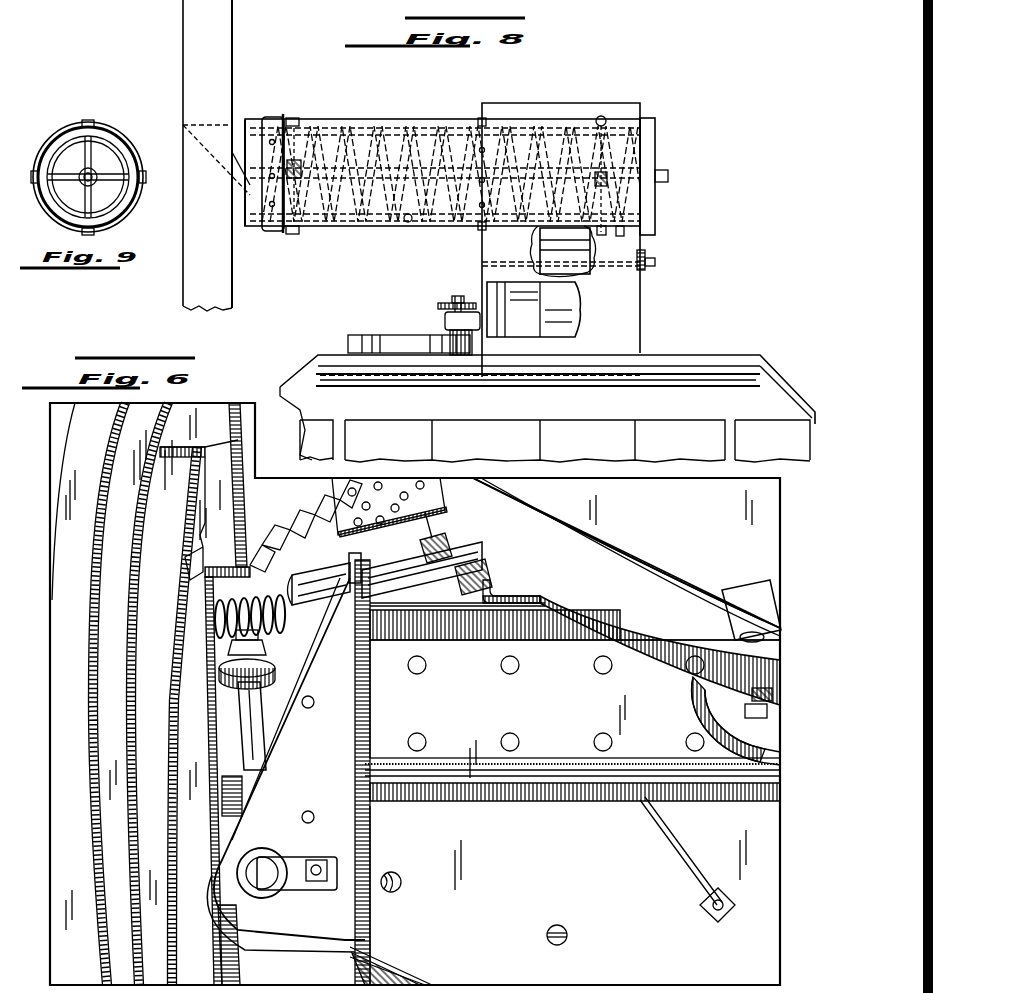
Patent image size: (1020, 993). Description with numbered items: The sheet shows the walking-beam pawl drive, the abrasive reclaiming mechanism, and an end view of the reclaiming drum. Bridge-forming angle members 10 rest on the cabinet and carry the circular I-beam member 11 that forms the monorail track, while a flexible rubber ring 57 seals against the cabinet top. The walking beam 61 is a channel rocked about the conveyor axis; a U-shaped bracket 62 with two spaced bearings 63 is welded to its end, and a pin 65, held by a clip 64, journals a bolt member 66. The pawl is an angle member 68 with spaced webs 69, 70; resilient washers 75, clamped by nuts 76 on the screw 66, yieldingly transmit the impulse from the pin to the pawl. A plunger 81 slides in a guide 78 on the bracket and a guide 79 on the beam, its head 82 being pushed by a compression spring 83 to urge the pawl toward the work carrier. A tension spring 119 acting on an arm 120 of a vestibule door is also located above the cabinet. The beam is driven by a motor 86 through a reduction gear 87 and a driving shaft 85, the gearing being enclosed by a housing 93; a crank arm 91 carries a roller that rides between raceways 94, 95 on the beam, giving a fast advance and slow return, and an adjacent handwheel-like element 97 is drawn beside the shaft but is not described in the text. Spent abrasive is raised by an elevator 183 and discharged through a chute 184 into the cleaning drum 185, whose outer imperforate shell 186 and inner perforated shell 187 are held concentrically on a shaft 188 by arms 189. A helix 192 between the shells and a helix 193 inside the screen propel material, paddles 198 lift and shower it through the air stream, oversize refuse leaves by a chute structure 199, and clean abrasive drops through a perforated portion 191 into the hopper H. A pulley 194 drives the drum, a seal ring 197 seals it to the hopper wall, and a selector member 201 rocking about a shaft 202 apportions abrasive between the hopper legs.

In FIG. 8, the bridge-forming angle members 10 is at (300, 366).
In FIG. 8, the circular I-beam member 11 is at (378, 378).
In FIG. 6, the circular I-beam member 11 is at (114, 697).
In FIG. 6, the flexible element 57 is at (177, 867).
In FIG. 6, the walking beam 61 is at (554, 800).
In FIG. 6, the bracket 62 is at (314, 784).
In FIG. 6, the bearings 63 is at (280, 892).
In FIG. 6, the clip 64 is at (306, 862).
In FIG. 6, the pin 65 is at (254, 857).
In FIG. 6, the bolt member 66 is at (262, 716).
In FIG. 6, the angle member 68 is at (204, 650).
In FIG. 6, the web 69 is at (262, 670).
In FIG. 6, the web 70 is at (212, 752).
In FIG. 6, the resilient washers 75 is at (224, 810).
In FIG. 6, the nuts 76 is at (260, 647).
In FIG. 6, the guide 78 is at (350, 555).
In FIG. 6, the guide 79 is at (498, 578).
In FIG. 6, the plunger 81 is at (412, 566).
In FIG. 6, the head 82 is at (212, 592).
In FIG. 6, the compression spring 83 is at (294, 578).
In FIG. 8, the driving shaft 85 is at (460, 296).
In FIG. 8, the motor 86 is at (576, 314).
In FIG. 8, the reduction gear 87 is at (446, 312).
In FIG. 6, the crank arm 91 is at (712, 700).
In FIG. 8, the housing 93 is at (370, 340).
In FIG. 6, the housing 93 is at (672, 550).
In FIG. 6, the raceway 94 is at (440, 760).
In FIG. 6, the raceway 95 is at (456, 642).
In FIG. 8, the handwheel 97 is at (454, 302).
In FIG. 6, the tension spring 119 is at (450, 540).
In FIG. 6, the arm 120 is at (420, 488).
In FIG. 8, the elevator 183 is at (193, 41).
In FIG. 8, the chute 184 is at (241, 150).
In FIG. 8, the cleaning drum 185 is at (396, 124).
In FIG. 9, the outer imperforate shell 186 is at (126, 165).
In FIG. 8, the outer imperforate shell 186 is at (372, 228).
In FIG. 9, the inner perforated shell 187 is at (94, 137).
In FIG. 8, the inner perforated shell 187 is at (408, 226).
In FIG. 9, the shaft 188 is at (88, 177).
In FIG. 8, the shaft 188 is at (660, 173).
In FIG. 9, the arms 189 is at (95, 183).
In FIG. 8, the arms 189 is at (605, 118).
In FIG. 8, the perforated portion 191 is at (624, 236).
In FIG. 8, the helix 192 is at (318, 228).
In FIG. 8, the helix 193 is at (338, 228).
In FIG. 8, the pulley 194 is at (272, 118).
In FIG. 8, the seal ring 197 is at (482, 120).
In FIG. 8, the paddles 198 is at (320, 128).
In FIG. 8, the chute structure 199 is at (655, 207).
In FIG. 8, the selector member 201 is at (578, 262).
In FIG. 8, the shaft 202 is at (656, 262).
In FIG. 8, the abrasive hopper H is at (646, 318).